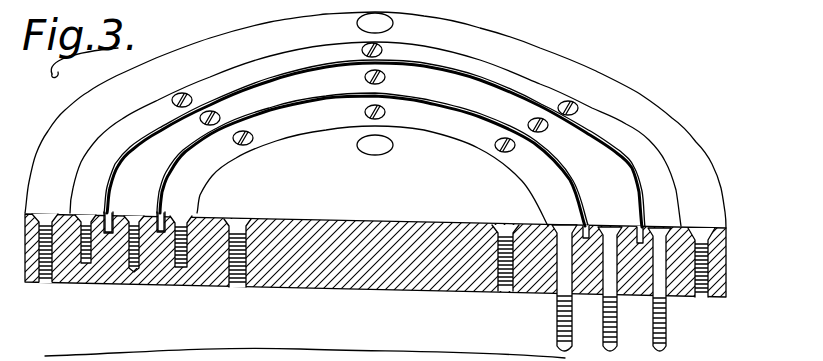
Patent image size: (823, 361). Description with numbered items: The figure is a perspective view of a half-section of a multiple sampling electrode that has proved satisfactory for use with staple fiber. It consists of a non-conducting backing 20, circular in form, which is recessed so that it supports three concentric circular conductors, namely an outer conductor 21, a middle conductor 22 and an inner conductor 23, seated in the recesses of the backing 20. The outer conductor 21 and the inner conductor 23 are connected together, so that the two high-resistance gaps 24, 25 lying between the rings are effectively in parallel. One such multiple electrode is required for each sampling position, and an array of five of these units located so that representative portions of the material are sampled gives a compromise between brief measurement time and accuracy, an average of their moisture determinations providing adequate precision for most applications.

The non-conducting backing 20 is at (313, 283).
The outer conductor 21 is at (445, 57).
The middle conductor 22 is at (453, 88).
The inner conductor 23 is at (412, 118).
The high-resistance gap 24 is at (100, 283).
The high-resistance gap 25 is at (153, 283).